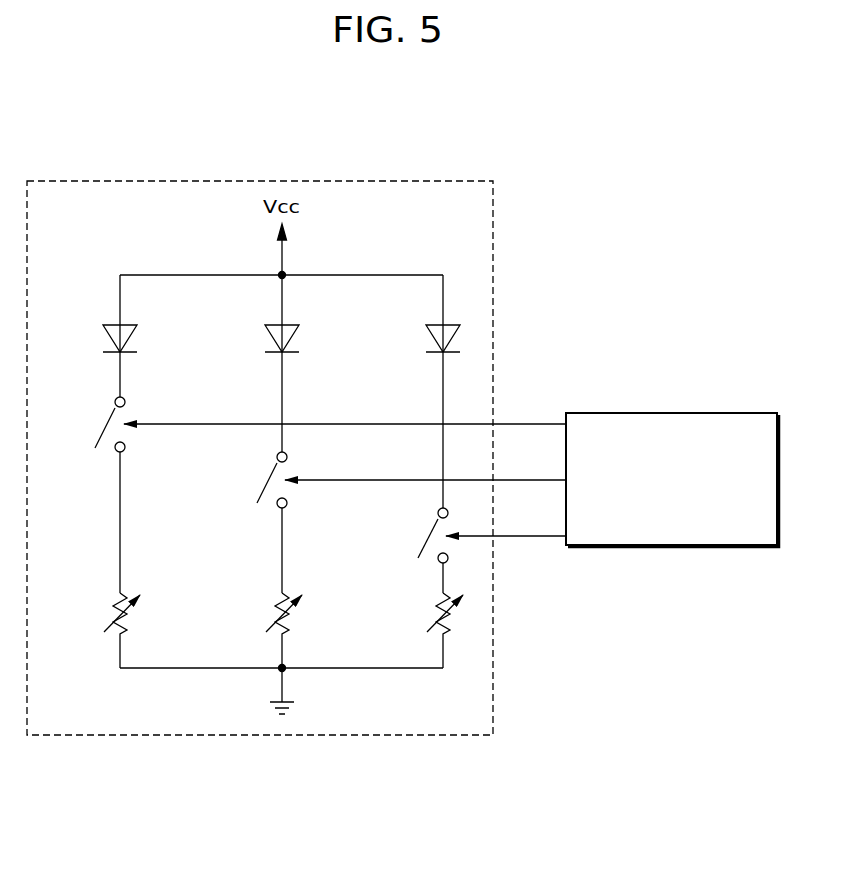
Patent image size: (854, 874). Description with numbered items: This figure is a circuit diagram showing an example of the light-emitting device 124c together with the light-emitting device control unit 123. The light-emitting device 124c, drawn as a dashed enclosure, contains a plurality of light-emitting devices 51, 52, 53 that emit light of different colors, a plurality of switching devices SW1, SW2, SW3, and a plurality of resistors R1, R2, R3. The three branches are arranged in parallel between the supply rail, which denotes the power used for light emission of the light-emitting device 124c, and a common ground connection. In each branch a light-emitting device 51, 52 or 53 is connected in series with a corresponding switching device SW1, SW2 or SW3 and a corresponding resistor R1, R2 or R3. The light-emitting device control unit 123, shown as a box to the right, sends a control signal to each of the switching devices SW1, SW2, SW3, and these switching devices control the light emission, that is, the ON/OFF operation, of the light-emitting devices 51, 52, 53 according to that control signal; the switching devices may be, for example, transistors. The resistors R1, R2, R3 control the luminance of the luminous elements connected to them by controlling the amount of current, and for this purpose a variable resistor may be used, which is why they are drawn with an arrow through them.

The light-emitting device 124c is at (405, 181).
The light-emitting device control unit 123 is at (675, 413).
The light-emitting device 51 is at (102, 336).
The light-emitting device 52 is at (265, 363).
The light-emitting device 53 is at (426, 391).
The switching device SW1 is at (86, 495).
The switching device SW2 is at (247, 522).
The switching device SW3 is at (409, 550).
The resistor R1 is at (106, 630).
The resistor R2 is at (267, 630).
The resistor R3 is at (429, 630).